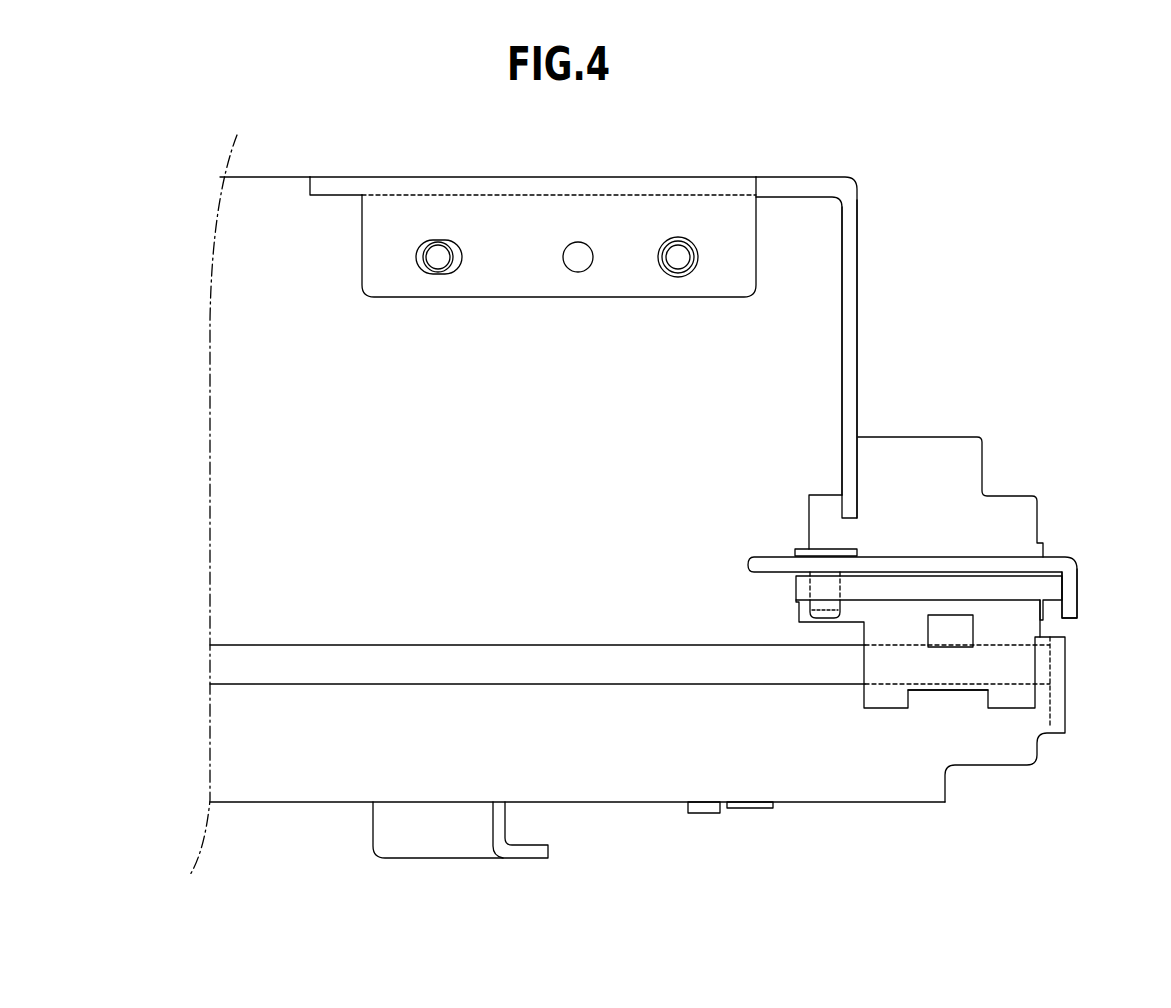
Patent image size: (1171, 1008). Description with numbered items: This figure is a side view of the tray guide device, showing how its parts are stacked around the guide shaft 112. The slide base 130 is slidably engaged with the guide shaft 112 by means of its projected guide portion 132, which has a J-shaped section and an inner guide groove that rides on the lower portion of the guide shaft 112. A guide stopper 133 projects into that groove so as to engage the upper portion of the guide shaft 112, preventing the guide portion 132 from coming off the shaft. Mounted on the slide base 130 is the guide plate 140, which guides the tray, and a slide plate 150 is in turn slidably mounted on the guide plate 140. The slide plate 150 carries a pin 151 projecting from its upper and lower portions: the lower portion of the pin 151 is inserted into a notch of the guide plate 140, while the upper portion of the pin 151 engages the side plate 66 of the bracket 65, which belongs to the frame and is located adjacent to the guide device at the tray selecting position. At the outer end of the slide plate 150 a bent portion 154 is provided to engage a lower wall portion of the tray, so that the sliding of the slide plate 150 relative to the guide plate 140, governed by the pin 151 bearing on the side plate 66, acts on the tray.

The bracket 65 is at (802, 187).
The side plate 66 is at (840, 360).
The guide shaft 112 is at (513, 653).
The slide base 130 is at (885, 673).
The guide portion 132 is at (971, 673).
The guide stopper 133 is at (966, 632).
The guide plate 140 is at (1018, 585).
The slide plate 150 is at (922, 558).
The pin 151 is at (820, 527).
The bent portion 154 is at (1078, 590).